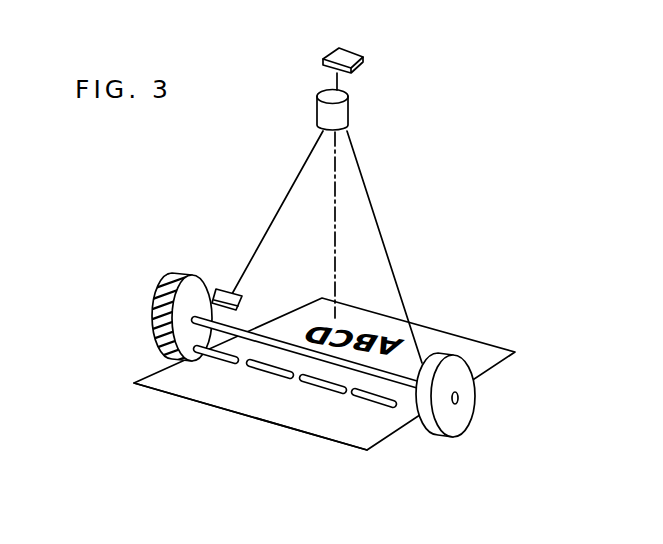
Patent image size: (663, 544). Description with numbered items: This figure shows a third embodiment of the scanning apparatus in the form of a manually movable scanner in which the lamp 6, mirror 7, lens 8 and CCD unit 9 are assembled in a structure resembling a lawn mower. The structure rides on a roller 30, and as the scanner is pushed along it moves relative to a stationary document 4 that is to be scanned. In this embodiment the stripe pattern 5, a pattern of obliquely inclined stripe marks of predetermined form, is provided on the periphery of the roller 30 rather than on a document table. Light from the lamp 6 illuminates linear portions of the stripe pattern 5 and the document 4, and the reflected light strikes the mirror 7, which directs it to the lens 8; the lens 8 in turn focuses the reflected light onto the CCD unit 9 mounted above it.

The document 4 is at (490, 362).
The roller 30 is at (158, 388).
The stripe pattern 5 is at (152, 310).
The lamp 6 is at (298, 385).
The mirror 7 is at (219, 289).
The lens 8 is at (345, 116).
The CCD unit 9 is at (353, 55).